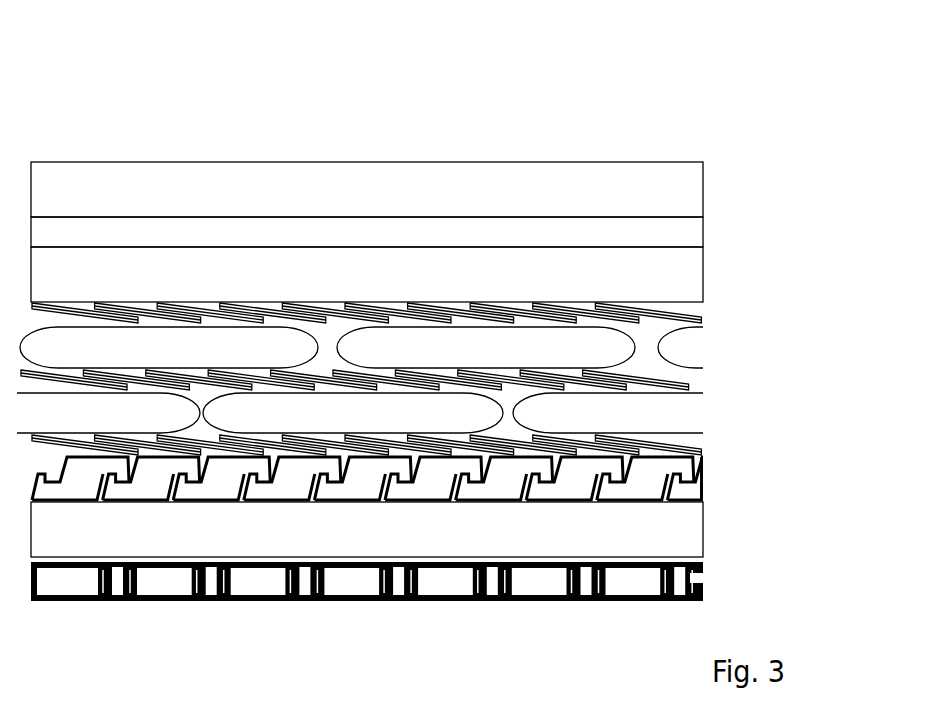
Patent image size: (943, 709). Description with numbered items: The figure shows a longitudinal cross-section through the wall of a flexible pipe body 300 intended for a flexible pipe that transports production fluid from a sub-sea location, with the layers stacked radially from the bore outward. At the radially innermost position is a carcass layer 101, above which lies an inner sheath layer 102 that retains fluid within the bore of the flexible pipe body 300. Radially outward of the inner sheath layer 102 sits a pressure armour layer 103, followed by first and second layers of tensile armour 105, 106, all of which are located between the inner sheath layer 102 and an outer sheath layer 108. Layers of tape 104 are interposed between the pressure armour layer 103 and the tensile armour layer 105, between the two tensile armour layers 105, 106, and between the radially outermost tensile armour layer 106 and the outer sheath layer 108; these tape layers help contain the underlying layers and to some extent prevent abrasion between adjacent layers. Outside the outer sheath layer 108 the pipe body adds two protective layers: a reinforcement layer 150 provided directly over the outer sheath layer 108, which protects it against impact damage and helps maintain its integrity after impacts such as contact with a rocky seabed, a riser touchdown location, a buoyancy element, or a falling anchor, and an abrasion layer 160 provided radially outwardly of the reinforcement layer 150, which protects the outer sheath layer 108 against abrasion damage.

The flexible pipe body 300 is at (722, 108).
The abrasion layer 160 is at (704, 190).
The reinforcement layer 150 is at (704, 232).
The outer sheath layer 108 is at (704, 274).
The layers of tape 104 is at (704, 311).
The second layer of tensile armour 106 is at (704, 343).
The first layer of tensile armour 105 is at (704, 413).
The pressure armour layer 103 is at (704, 483).
The inner sheath layer 102 is at (704, 530).
The carcass layer 101 is at (704, 578).